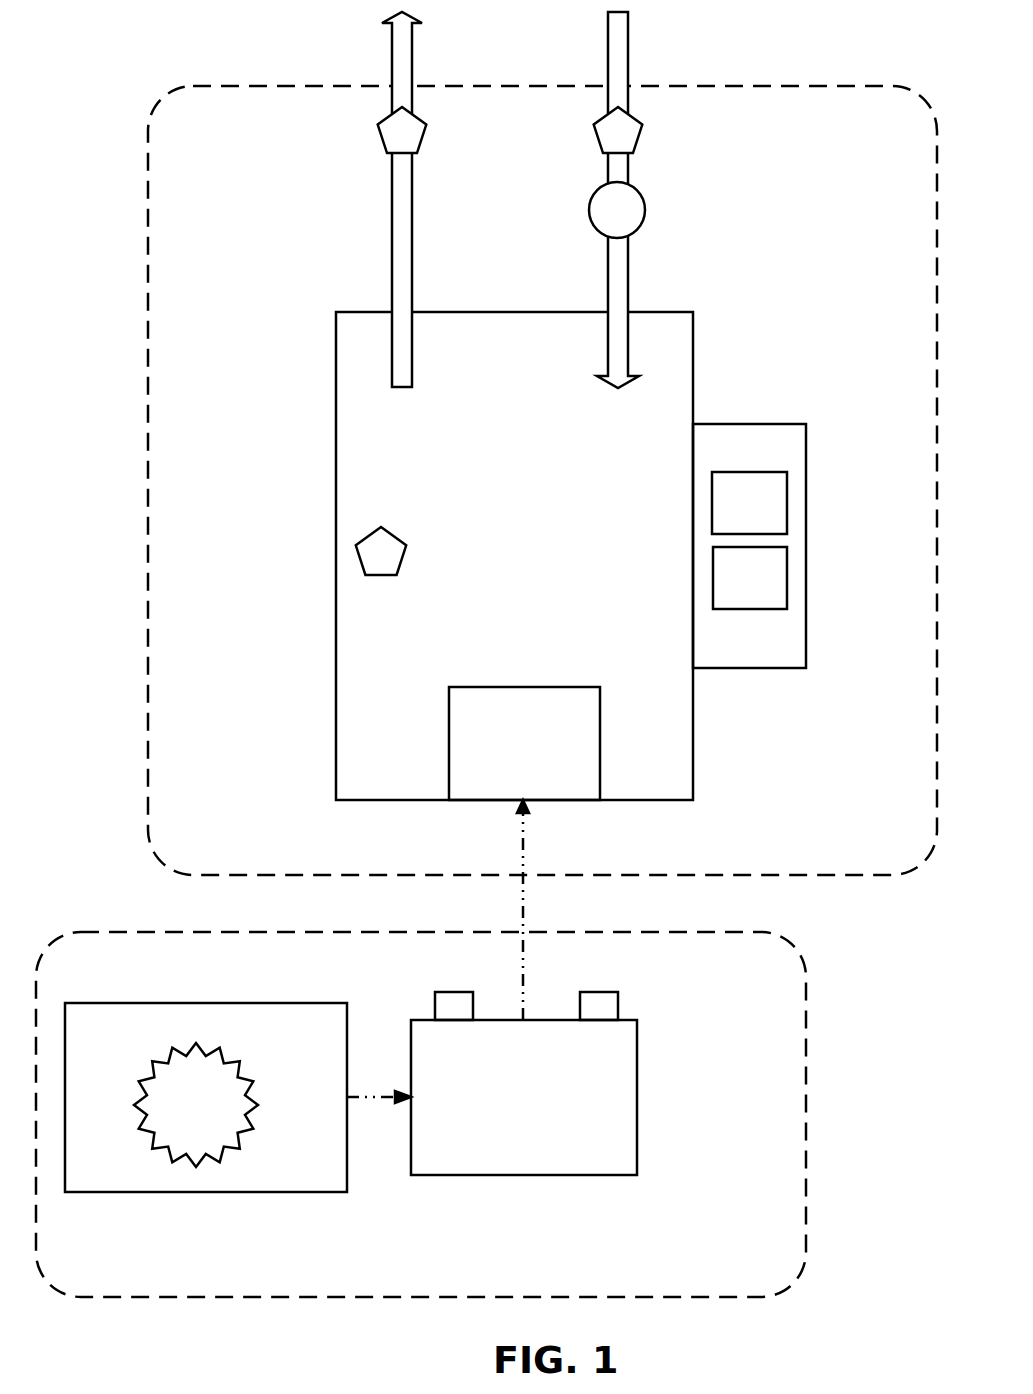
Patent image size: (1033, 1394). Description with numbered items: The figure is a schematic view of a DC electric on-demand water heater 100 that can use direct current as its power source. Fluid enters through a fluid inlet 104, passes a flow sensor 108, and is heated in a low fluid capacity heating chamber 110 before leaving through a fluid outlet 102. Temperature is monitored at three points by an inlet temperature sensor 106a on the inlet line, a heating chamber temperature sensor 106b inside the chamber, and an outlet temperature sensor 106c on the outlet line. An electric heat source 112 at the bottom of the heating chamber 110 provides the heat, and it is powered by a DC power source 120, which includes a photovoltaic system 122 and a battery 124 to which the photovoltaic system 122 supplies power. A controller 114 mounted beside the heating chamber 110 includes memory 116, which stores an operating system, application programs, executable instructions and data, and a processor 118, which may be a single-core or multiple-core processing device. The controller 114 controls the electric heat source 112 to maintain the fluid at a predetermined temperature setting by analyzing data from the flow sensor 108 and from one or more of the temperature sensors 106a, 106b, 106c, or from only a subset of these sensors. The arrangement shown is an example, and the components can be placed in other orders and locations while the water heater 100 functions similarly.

The DC electric on-demand water heater 100 is at (148, 199).
The fluid outlet 102 is at (412, 46).
The fluid inlet 104 is at (628, 37).
The inlet temperature sensor 106a is at (643, 125).
The heating chamber temperature sensor 106b is at (356, 557).
The outlet temperature sensor 106c is at (378, 144).
The flow sensor 108 is at (645, 205).
The low fluid capacity heating chamber 110 is at (336, 423).
The electric heat source 112 is at (580, 800).
The controller 114 is at (806, 538).
The memory 116 is at (749, 503).
The processor 118 is at (750, 578).
The DC power source 120 is at (806, 1100).
The photovoltaic system 122 is at (205, 1192).
The battery 124 is at (637, 1086).